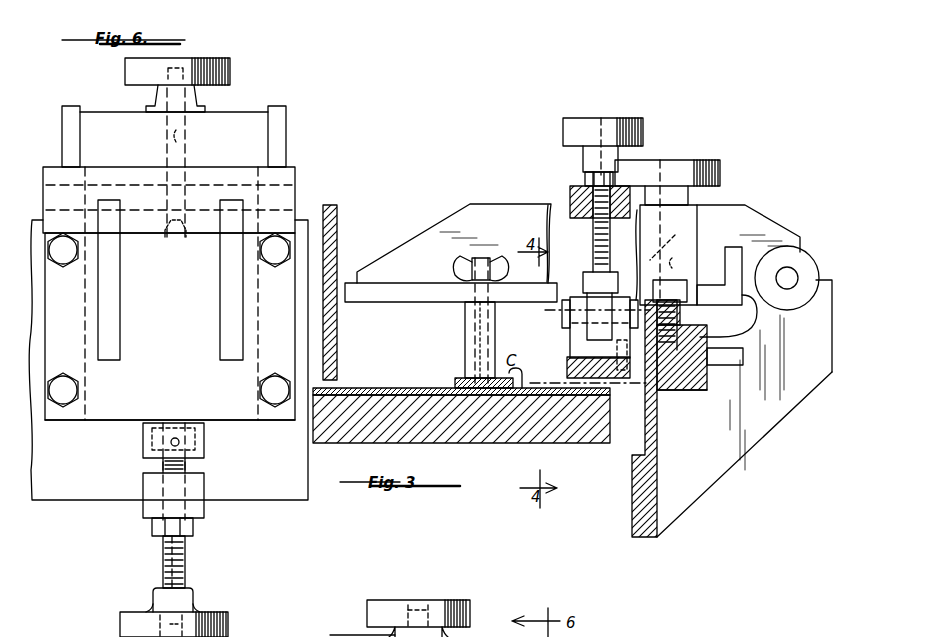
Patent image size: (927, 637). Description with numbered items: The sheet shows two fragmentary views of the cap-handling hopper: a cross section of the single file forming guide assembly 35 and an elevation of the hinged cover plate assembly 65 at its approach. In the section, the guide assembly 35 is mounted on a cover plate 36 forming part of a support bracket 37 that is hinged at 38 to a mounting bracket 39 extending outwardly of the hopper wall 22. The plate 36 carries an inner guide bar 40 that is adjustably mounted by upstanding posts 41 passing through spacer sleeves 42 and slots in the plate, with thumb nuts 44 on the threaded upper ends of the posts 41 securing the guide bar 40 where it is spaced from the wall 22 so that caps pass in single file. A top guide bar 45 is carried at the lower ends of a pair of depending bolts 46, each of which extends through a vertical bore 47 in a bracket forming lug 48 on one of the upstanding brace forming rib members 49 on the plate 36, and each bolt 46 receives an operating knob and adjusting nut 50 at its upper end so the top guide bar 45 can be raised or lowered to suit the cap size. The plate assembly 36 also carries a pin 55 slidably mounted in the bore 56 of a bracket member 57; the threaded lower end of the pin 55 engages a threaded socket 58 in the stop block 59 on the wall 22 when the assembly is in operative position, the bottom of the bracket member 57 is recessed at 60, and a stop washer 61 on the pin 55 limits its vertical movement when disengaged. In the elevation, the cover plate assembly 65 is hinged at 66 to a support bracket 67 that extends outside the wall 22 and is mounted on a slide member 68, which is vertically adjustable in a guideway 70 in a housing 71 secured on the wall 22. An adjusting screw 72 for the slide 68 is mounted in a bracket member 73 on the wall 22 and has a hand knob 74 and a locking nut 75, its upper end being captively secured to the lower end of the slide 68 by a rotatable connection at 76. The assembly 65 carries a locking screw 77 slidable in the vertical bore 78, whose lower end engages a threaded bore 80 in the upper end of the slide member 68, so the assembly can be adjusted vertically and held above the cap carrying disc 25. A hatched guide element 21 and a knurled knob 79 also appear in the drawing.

In FIG. 3, the hatched guide bar 21 is at (337, 215).
In FIG. 6, the outer peripheral wall 22 is at (48, 492).
In FIG. 3, the outer peripheral wall 22 is at (657, 540).
In FIG. 3, the cap carrying disc 25 is at (392, 396).
In FIG. 3, the single file forming guide assembly 35 is at (440, 235).
In FIG. 3, the cover plate 36 is at (380, 290).
In FIG. 3, the support bracket 37 is at (738, 205).
In FIG. 3, the hinge 38 is at (790, 275).
In FIG. 3, the mounting bracket 39 is at (760, 430).
In FIG. 3, the inner guide bar 40 is at (478, 392).
In FIG. 3, the upstanding posts 41 is at (476, 335).
In FIG. 3, the spacer sleeves 42 is at (465, 320).
In FIG. 3, the thumb nuts 44 is at (483, 255).
In FIG. 3, the top guide bar 45 is at (567, 368).
In FIG. 3, the depending bolts 46 is at (593, 263).
In FIG. 3, the vertical bore 47 is at (583, 218).
In FIG. 3, the bracket forming lug 48 is at (570, 198).
In FIG. 3, the brace forming rib members 49 is at (468, 210).
In FIG. 3, the operating knob and adjusting nut 50 is at (643, 130).
In FIG. 3, the pin 55 is at (672, 250).
In FIG. 3, the bore 56 is at (700, 212).
In FIG. 3, the bracket member 57 is at (705, 250).
In FIG. 3, the threaded socket 58 is at (675, 350).
In FIG. 3, the stop block 59 is at (675, 380).
In FIG. 3, the recess 60 is at (690, 308).
In FIG. 3, the stop washer 61 is at (660, 285).
In FIG. 6, the cover plate assembly 65 is at (292, 132).
In FIG. 6, the hinge 66 is at (284, 199).
In FIG. 6, the support bracket 67 is at (232, 325).
In FIG. 6, the slide member 68 is at (225, 393).
In FIG. 6, the guideway 70 is at (98, 313).
In FIG. 6, the housing 71 is at (70, 422).
In FIG. 6, the adjusting screw 72 is at (188, 558).
In FIG. 6, the bracket member 73 is at (146, 510).
In FIG. 6, the hand knob 74 is at (205, 612).
In FIG. 6, the locking nut 75 is at (195, 528).
In FIG. 6, the rotatable connection 76 is at (207, 442).
In FIG. 6, the locking screw 77 is at (195, 108).
In FIG. 6, the vertical bore 78 is at (186, 143).
In FIG. 6, the knurled knob 79 is at (470, 615).
In FIG. 6, the threaded bore 80 is at (183, 232).